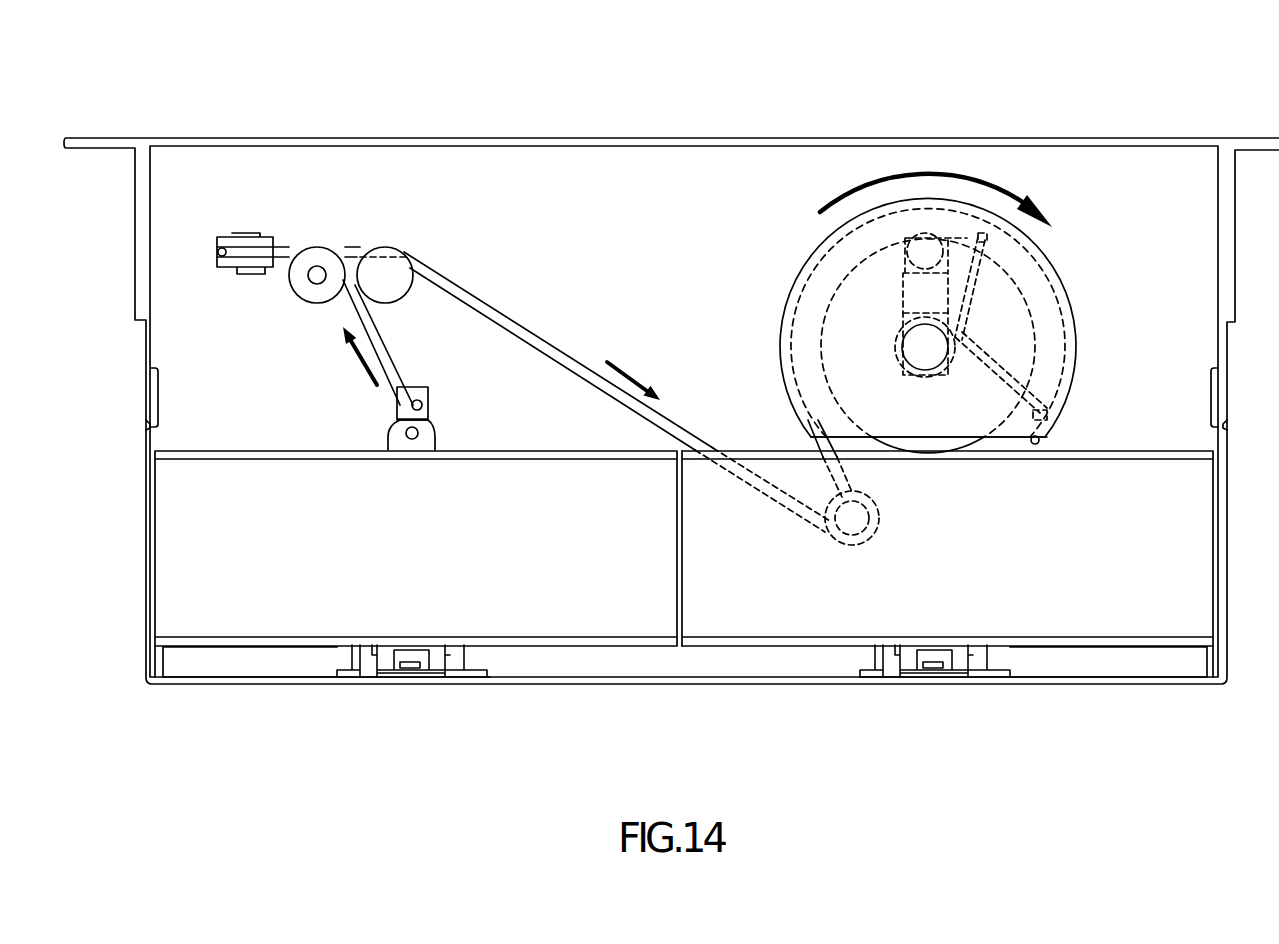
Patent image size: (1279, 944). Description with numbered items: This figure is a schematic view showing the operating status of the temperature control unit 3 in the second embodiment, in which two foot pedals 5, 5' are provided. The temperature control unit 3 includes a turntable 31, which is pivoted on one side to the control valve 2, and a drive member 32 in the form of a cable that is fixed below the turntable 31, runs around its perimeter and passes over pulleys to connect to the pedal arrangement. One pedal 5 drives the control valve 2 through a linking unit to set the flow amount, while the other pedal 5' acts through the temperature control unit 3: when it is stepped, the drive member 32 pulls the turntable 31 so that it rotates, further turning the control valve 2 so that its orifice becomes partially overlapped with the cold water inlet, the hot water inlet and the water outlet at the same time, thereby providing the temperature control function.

The control valve 2 is at (908, 292).
The temperature control unit 3 is at (933, 242).
The turntable 31 is at (878, 210).
The drive member 32 is at (578, 368).
The pedal 5 is at (947, 564).
The pedal 5' is at (418, 564).